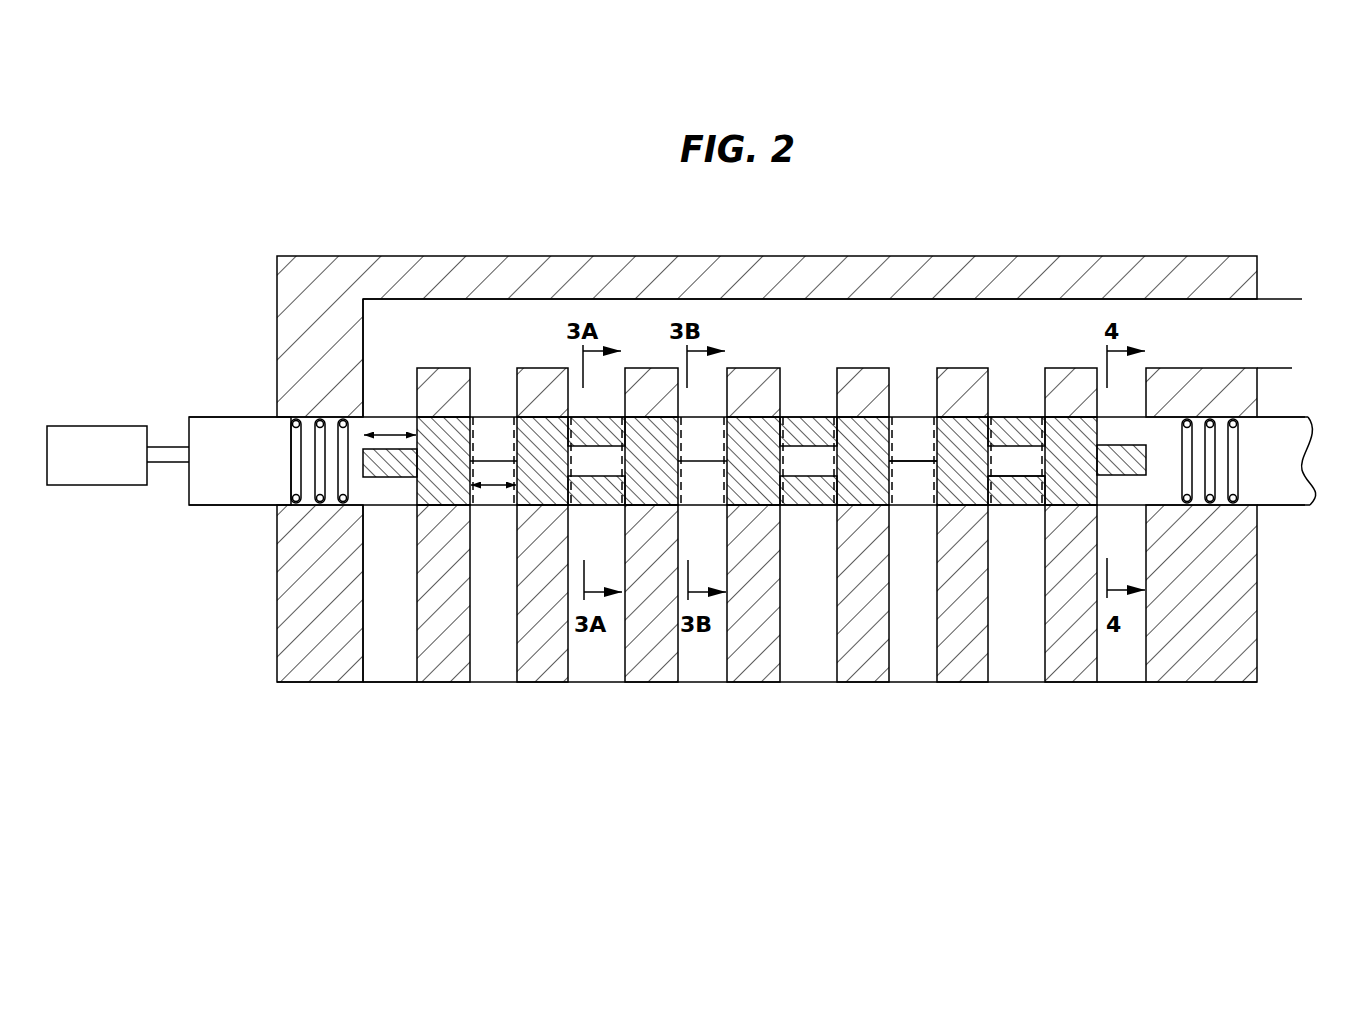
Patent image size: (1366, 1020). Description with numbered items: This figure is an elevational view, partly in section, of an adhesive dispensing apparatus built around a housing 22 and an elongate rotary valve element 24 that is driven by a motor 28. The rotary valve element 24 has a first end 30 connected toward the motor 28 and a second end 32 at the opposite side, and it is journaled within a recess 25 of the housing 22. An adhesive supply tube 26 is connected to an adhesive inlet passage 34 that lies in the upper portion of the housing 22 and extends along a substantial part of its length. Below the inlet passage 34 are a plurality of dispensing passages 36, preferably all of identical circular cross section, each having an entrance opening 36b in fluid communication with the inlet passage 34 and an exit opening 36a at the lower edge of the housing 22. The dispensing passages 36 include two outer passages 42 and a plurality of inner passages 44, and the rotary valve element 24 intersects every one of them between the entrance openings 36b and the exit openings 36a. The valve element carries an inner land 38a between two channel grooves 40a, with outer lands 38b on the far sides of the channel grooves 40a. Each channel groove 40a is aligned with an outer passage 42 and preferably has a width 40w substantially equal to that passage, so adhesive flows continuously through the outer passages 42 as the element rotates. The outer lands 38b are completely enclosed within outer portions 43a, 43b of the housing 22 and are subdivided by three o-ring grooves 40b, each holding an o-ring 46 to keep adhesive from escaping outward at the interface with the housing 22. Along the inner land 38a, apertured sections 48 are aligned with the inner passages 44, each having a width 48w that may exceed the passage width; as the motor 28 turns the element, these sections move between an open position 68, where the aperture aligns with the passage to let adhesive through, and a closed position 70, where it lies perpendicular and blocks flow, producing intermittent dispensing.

The housing 22 is at (604, 276).
The rotary valve element 24 is at (212, 428).
The recess 25 is at (356, 440).
The adhesive supply tube 26 is at (1268, 322).
The motor 28 is at (105, 432).
The first end 30 is at (189, 487).
The second end 32 is at (1315, 487).
The adhesive inlet passage 34 is at (930, 345).
The dispensing passages 36 is at (400, 672).
The exit opening 36a is at (383, 685).
The entrance opening 36b is at (396, 375).
The inner land 38a is at (489, 432).
The outer lands 38b is at (283, 462).
The channel grooves 40a is at (390, 490).
The o-ring grooves 40b is at (312, 500).
The width of channel groove 40w is at (389, 432).
The outer passages 42 is at (372, 610).
The outer portion of housing 43a is at (290, 667).
The outer portion of housing 43b is at (1247, 628).
The inner passages 44 is at (497, 672).
The o-ring 46 is at (1205, 418).
The apertured section 48 is at (705, 415).
The width of apertured section 48w is at (488, 488).
The open position 68 is at (913, 488).
The closed position 70 is at (1018, 490).